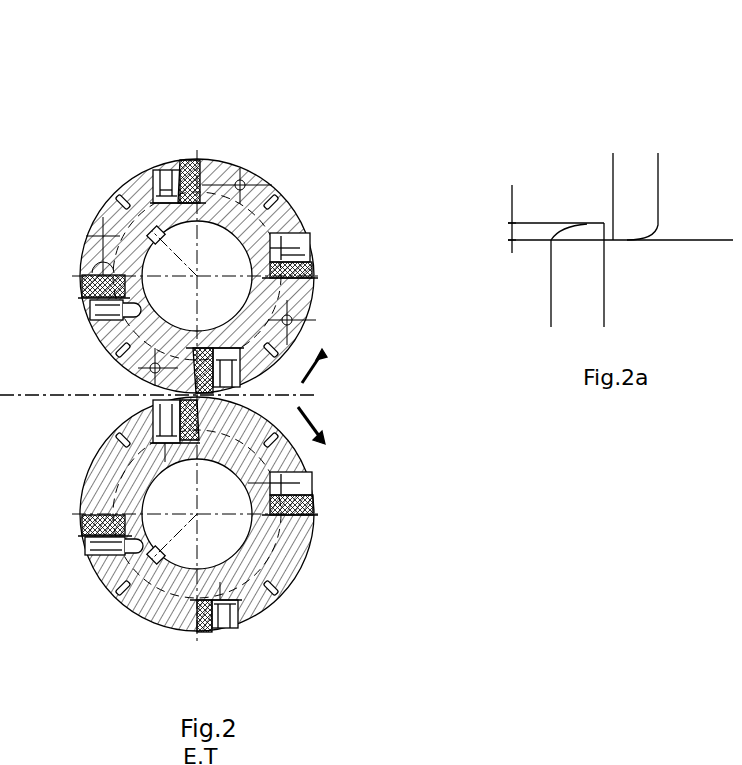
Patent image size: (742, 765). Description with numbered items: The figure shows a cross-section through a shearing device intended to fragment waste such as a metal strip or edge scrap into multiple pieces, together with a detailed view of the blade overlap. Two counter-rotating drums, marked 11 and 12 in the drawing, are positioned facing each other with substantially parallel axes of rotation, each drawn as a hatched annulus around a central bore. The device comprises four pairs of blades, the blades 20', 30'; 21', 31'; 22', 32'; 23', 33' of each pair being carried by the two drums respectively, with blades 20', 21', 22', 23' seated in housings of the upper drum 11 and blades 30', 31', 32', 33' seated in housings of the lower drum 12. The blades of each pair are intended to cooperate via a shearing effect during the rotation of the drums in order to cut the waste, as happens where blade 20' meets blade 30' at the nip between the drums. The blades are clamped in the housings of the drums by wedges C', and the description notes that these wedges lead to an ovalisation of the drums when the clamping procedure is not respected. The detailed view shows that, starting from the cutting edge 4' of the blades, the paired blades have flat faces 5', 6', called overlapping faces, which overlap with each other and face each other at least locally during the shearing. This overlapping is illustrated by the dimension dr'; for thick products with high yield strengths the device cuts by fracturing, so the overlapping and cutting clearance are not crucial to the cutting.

In FIG. 2, the first roll 11 is at (197, 275).
In FIG. 2, the second roll 12 is at (197, 520).
In FIG. 2, the blade 20' is at (285, 369).
In FIG. 2A, the blade 20' is at (673, 197).
In FIG. 2, the blade 30' is at (267, 430).
In FIG. 2A, the blade 30' is at (547, 275).
In FIG. 2, the blade 21' is at (81, 297).
In FIG. 2, the blade 22' is at (203, 143).
In FIG. 2, the blade 23' is at (345, 255).
In FIG. 2, the blade 31' is at (80, 533).
In FIG. 2, the blade 32' is at (209, 645).
In FIG. 2, the blade 33' is at (326, 505).
In FIG. 2, the wedge C' is at (209, 291).
In FIG. 2A, the cutting edge 4' is at (606, 234).
In FIG. 2A, the flat face (overlapping face) 5' is at (628, 204).
In FIG. 2A, the flat face (overlapping face) 6' is at (583, 258).
In FIG. 2A, the overlapping dimension dr' is at (502, 219).